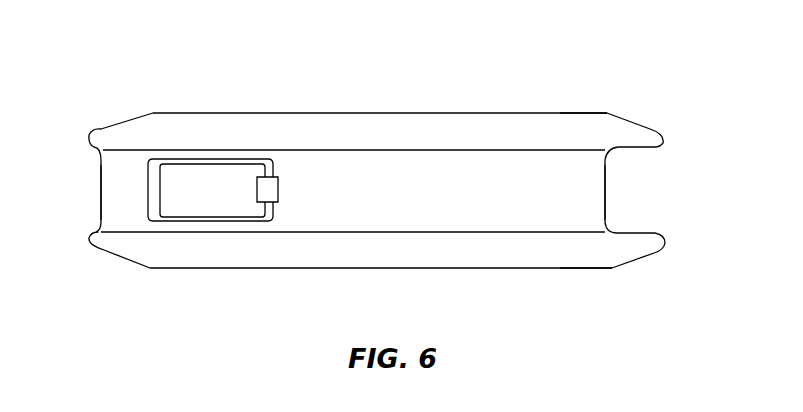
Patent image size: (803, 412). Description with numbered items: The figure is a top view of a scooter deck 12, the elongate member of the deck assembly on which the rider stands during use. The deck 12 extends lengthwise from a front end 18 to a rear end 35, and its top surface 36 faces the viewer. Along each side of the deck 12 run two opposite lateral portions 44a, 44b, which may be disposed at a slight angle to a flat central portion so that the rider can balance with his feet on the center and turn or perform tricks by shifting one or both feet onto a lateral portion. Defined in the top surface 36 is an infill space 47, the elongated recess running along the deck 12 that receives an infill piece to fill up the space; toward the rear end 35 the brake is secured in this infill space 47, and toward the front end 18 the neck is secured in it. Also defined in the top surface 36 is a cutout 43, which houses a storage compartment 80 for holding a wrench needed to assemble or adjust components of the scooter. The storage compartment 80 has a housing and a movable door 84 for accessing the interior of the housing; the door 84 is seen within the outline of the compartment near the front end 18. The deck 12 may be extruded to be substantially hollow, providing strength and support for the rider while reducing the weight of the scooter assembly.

The deck 12 is at (190, 83).
The front end 18 is at (102, 190).
The rear end 35 is at (605, 190).
The top surface 36 is at (314, 137).
The cutout 43 is at (156, 168).
The lateral portion 44a is at (515, 113).
The lateral portion 44b is at (530, 268).
The infill space 47 is at (488, 175).
The storage compartment 80 is at (202, 180).
The movable door 84 is at (217, 207).